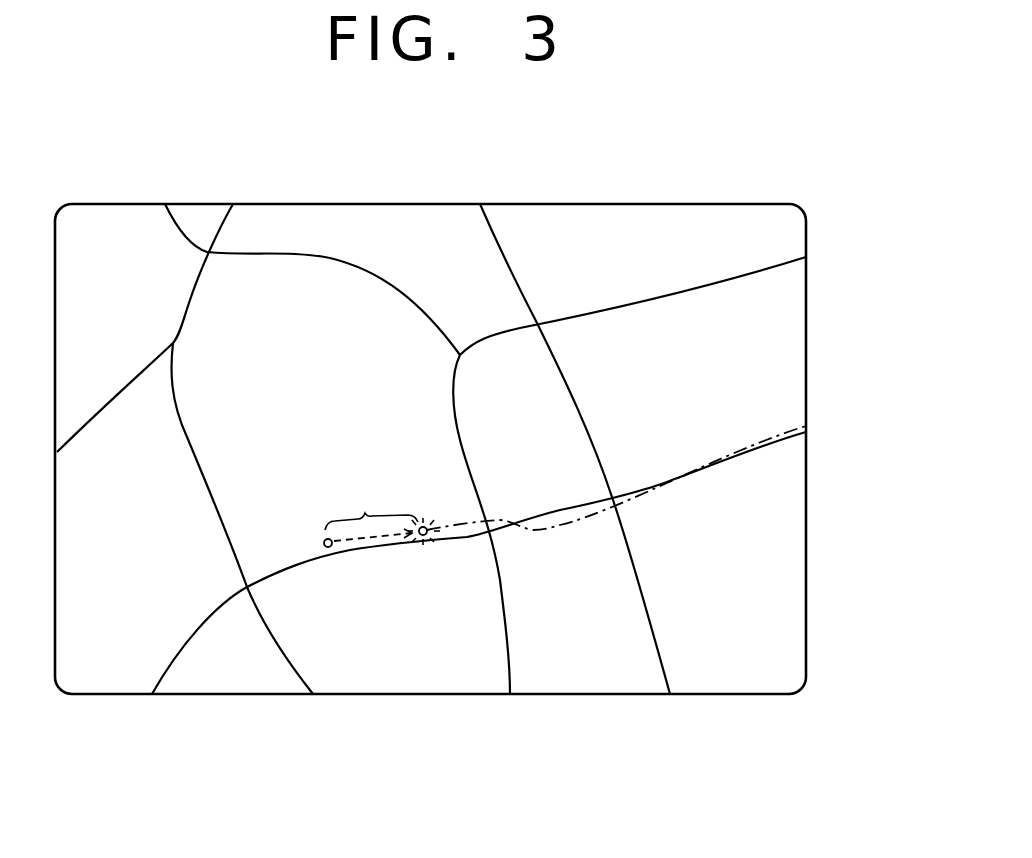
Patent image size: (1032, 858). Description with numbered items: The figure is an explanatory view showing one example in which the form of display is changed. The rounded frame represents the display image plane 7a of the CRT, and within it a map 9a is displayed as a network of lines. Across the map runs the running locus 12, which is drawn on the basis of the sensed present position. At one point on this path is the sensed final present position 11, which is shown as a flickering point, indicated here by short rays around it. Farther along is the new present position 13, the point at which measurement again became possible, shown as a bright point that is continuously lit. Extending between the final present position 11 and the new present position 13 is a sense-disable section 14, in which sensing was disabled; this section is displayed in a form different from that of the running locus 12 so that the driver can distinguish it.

The display image plane 7a is at (678, 204).
The map 9a is at (292, 210).
The sensed final present position 11 is at (423, 548).
The running locus 12 is at (770, 428).
The new present position 13 is at (325, 556).
The sense-disable section 14 is at (365, 510).